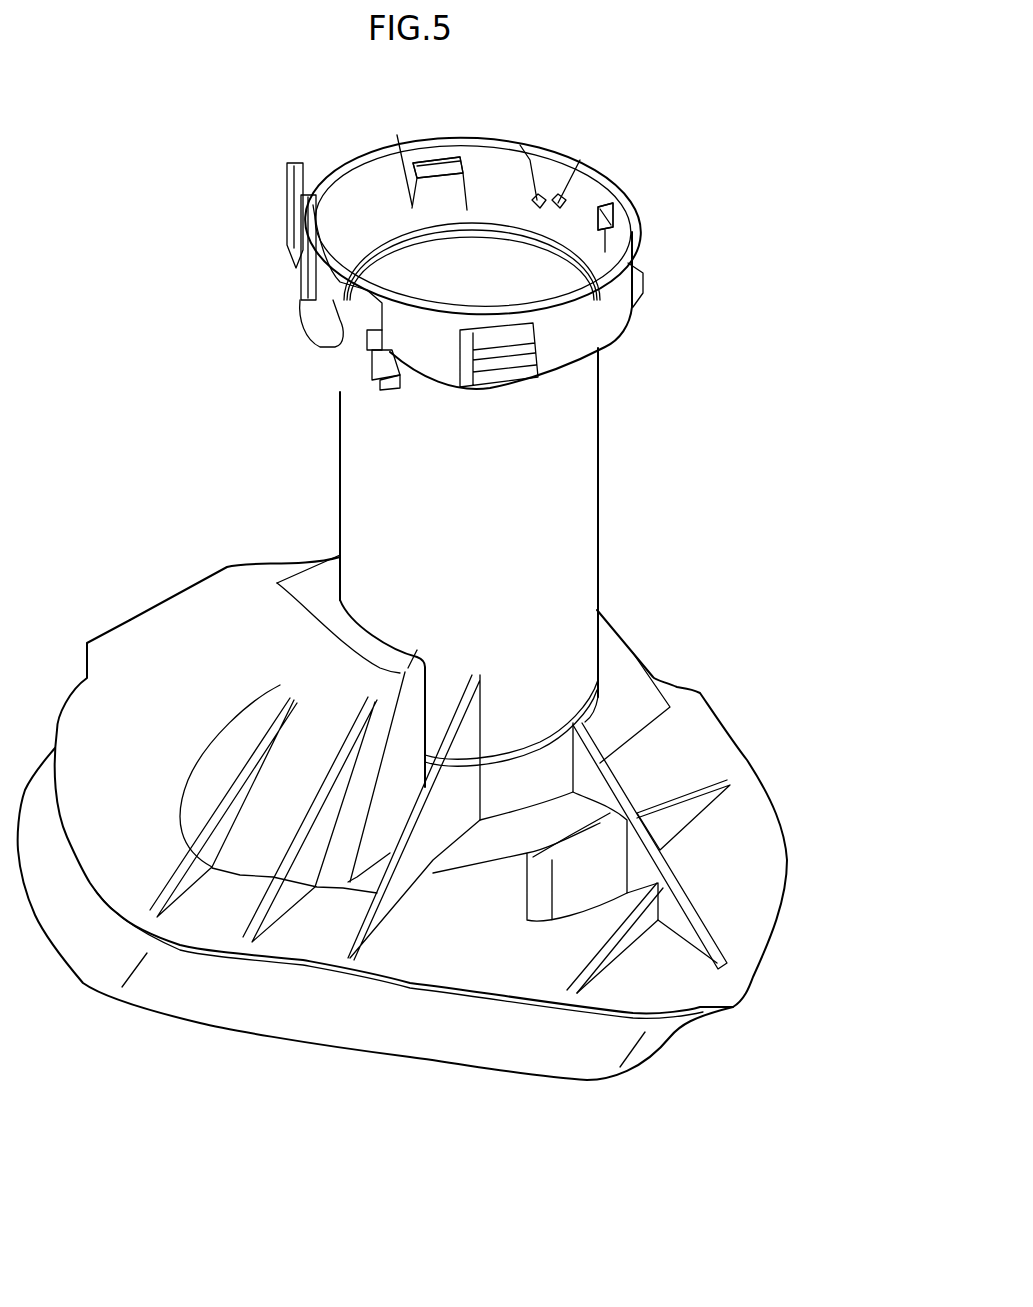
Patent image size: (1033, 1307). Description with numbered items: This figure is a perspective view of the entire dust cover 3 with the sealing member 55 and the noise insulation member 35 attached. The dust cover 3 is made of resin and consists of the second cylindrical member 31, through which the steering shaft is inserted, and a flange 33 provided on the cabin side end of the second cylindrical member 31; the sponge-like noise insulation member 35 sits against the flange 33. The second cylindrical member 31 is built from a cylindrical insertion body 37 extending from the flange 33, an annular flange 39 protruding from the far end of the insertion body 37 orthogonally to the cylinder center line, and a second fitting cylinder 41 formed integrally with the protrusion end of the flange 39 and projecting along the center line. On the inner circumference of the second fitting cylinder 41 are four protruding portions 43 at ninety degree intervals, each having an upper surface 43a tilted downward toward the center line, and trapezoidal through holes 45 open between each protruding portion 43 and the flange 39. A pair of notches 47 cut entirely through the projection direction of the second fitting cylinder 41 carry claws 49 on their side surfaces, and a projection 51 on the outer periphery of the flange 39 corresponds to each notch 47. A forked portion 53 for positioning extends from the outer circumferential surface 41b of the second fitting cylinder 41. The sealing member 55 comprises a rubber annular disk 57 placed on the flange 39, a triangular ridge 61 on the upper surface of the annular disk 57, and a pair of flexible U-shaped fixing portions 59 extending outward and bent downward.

The dust cover 3 is at (598, 533).
The second cylindrical member 31 is at (697, 345).
The flange 33 is at (720, 740).
The noise insulation member 35 is at (335, 1040).
The insertion body 37 is at (600, 402).
The annular flange 39 is at (607, 355).
The second fitting cylinder 41 is at (617, 320).
The outer circumferential surface 41b is at (553, 363).
The protruding portion 43 is at (450, 163).
The upper surface 43a is at (433, 165).
The through hole 45 is at (490, 378).
The notch 47 is at (390, 350).
The claw 49 is at (377, 360).
The projection 51 is at (387, 387).
The forked portion 53 is at (290, 180).
The sealing member 55 is at (372, 228).
The annular disk 57 is at (545, 245).
The fixing portion 59 is at (310, 330).
The ridge 61 is at (387, 237).